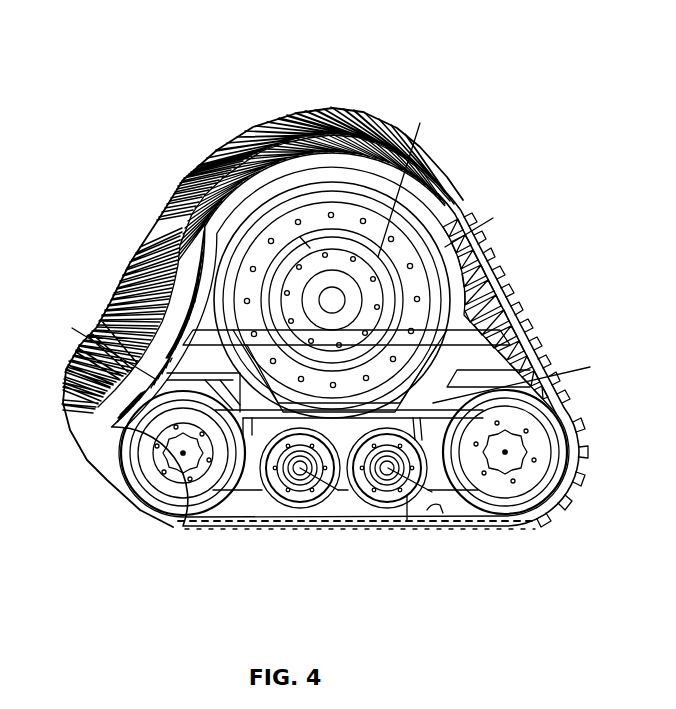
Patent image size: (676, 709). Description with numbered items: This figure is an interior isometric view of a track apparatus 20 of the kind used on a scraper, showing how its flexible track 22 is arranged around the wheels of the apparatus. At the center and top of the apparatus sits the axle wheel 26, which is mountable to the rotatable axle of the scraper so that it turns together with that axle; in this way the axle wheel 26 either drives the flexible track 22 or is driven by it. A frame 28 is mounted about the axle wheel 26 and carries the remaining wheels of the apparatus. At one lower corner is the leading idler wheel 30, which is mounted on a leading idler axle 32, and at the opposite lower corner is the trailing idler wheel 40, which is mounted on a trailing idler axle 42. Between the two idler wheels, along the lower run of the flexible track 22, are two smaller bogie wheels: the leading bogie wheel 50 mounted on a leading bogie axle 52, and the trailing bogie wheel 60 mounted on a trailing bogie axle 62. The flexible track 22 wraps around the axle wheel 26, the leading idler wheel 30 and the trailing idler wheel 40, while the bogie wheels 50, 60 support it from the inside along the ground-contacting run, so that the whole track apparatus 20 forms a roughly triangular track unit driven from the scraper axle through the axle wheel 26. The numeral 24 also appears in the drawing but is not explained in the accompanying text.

The track apparatus 20 is at (237, 95).
The flexible track 22 is at (158, 232).
The endless track belt 24 is at (443, 517).
The axle wheel 26 is at (433, 227).
The frame 28 is at (503, 320).
The leading idler wheel 30 is at (537, 492).
The leading idler axle 32 is at (527, 434).
The trailing idler wheel 40 is at (115, 482).
The trailing idler axle 42 is at (157, 450).
The leading bogie wheel 50 is at (447, 433).
The leading bogie axle 52 is at (478, 525).
The trailing bogie wheel 60 is at (280, 500).
The trailing bogie axle 62 is at (370, 523).